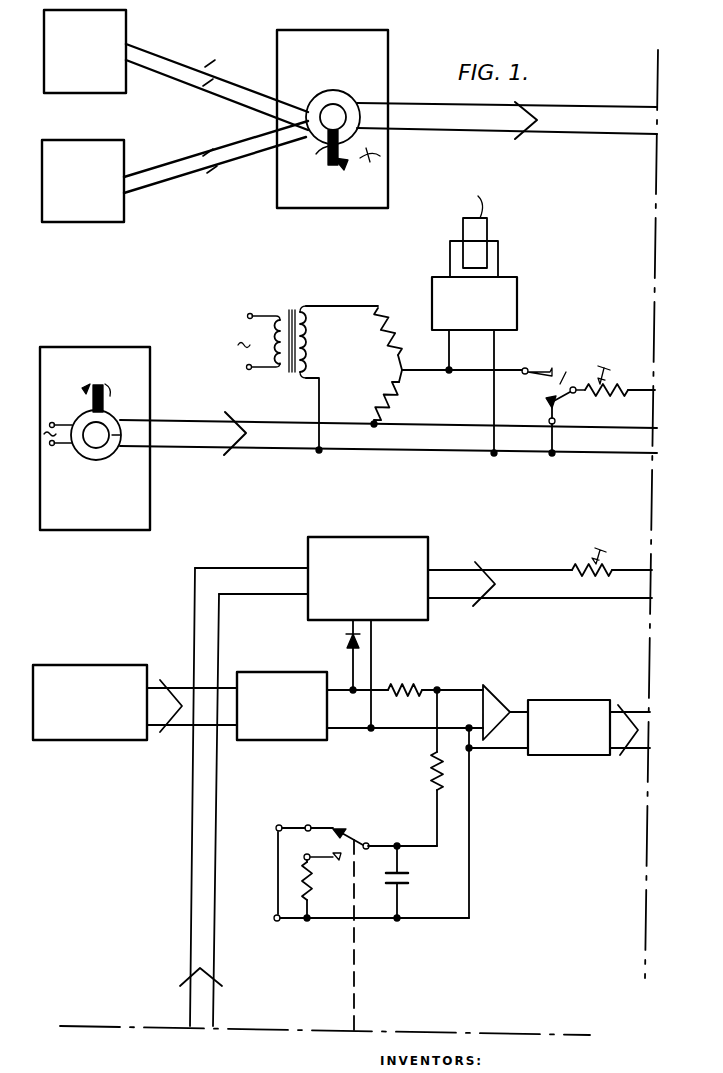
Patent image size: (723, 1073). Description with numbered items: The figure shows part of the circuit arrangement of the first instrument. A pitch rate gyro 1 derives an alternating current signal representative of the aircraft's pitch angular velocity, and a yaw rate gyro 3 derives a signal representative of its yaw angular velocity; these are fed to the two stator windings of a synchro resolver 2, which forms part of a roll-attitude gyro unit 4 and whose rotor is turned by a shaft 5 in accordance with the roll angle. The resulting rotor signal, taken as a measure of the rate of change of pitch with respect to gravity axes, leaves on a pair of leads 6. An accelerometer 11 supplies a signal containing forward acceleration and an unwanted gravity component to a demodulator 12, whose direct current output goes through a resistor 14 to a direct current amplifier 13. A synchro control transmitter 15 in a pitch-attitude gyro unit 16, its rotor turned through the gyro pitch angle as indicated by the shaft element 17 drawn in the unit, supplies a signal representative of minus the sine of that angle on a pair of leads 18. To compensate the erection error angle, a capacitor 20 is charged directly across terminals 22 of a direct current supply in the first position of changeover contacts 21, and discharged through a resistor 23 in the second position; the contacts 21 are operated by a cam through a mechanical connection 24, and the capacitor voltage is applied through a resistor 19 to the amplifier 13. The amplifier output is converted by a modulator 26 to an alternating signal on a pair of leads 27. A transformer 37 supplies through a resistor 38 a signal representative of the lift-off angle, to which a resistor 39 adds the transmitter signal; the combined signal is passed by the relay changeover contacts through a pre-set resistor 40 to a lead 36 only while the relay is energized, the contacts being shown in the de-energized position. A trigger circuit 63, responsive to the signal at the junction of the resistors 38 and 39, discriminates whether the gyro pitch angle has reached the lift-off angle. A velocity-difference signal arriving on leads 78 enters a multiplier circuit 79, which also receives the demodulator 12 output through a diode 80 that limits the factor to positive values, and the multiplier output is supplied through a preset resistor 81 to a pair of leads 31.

The pitch rate gyro 1 is at (108, 222).
The synchro resolver 2 is at (350, 98).
The yaw rate gyro 3 is at (112, 90).
The roll-attitude gyro unit 4 is at (388, 45).
The shaft 5 is at (328, 160).
The pair of leads 6 is at (628, 108).
The accelerometer 11 is at (90, 665).
The demodulator 12 is at (268, 655).
The direct current amplifier 13 is at (492, 686).
The resistor 14 is at (396, 684).
The synchro control transmitter 15 is at (112, 413).
The pitch-attitude gyro unit 16 is at (150, 378).
The pitch shaft 17 is at (98, 388).
The pair of leads 18 is at (198, 446).
The resistor 19 is at (430, 770).
The capacitor 20 is at (412, 882).
The changeover contacts 21 is at (350, 832).
The terminals 22 is at (275, 892).
The resistor 23 is at (316, 902).
The mechanical connection 24 is at (356, 988).
The modulator 26 is at (545, 700).
The pair of leads 27 is at (642, 738).
The pair of leads 31 is at (630, 574).
The lead 36 is at (636, 390).
The transformer 37 is at (296, 306).
The resistor 38 is at (382, 322).
The resistor 39 is at (388, 396).
The pre-set resistor 40 is at (612, 395).
The trigger circuit 63 is at (517, 290).
The leads 78 is at (190, 1011).
The multiplier circuit 79 is at (378, 537).
The diode 80 is at (346, 642).
The preset resistor 81 is at (575, 562).